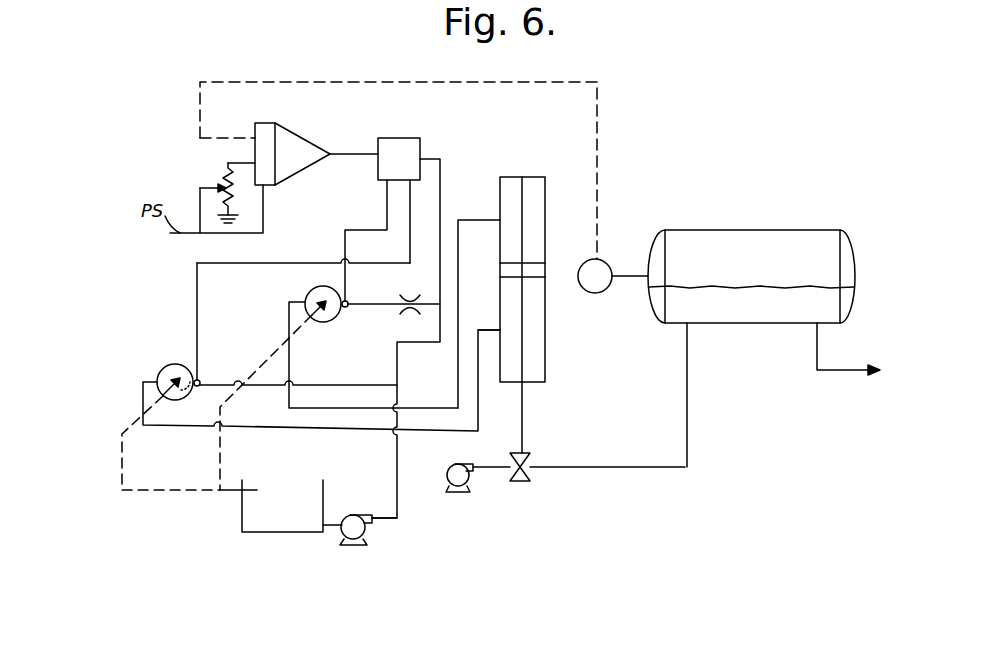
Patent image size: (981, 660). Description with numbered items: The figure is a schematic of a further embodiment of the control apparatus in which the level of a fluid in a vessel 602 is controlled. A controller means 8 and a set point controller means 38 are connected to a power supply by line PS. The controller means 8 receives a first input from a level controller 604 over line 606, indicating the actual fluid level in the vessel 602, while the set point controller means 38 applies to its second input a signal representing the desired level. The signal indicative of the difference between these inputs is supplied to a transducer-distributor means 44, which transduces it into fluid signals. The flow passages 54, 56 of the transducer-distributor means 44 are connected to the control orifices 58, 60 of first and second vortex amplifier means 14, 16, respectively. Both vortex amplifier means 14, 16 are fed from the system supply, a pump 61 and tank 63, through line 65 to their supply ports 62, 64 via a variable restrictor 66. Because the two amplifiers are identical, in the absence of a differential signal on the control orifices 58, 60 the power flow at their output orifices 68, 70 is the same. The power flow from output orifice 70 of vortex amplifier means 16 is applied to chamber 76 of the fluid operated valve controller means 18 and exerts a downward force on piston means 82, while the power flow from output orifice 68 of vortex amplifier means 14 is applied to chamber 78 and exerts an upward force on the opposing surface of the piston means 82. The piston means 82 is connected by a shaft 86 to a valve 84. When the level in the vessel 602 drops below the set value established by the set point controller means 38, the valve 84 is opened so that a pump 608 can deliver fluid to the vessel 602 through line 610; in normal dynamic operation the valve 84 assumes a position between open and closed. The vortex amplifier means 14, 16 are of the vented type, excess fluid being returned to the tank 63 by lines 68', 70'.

The controller means 8 is at (306, 141).
The transducer-distributor means 44 is at (396, 138).
The set point controller means 38 is at (226, 178).
The flow passage 56 is at (387, 207).
The flow passage 54 is at (410, 246).
The control orifice 60 is at (341, 249).
The control orifice 58 is at (197, 318).
The first vortex amplifier means 14 is at (165, 367).
The supply port 62 is at (200, 379).
The second vortex amplifier means 16 is at (322, 322).
The supply port 64 is at (348, 309).
The variable restrictor 66 is at (408, 296).
The line 65 is at (400, 356).
The output orifice 70 is at (349, 350).
The line 70' is at (266, 402).
The output orifice 68 is at (291, 380).
The line 68' is at (149, 454).
The tank 63 is at (272, 533).
The pump 61 is at (354, 514).
The fluid operated valve controller means 18 is at (545, 253).
The piston means 82 is at (541, 270).
The chamber 76 is at (518, 229).
The chamber 78 is at (518, 339).
The shaft 86 is at (523, 428).
The valve 84 is at (520, 482).
The pump 608 is at (470, 485).
The line 610 is at (687, 431).
The level controller 604 is at (595, 294).
The line 606 is at (603, 143).
The vessel 602 is at (737, 230).